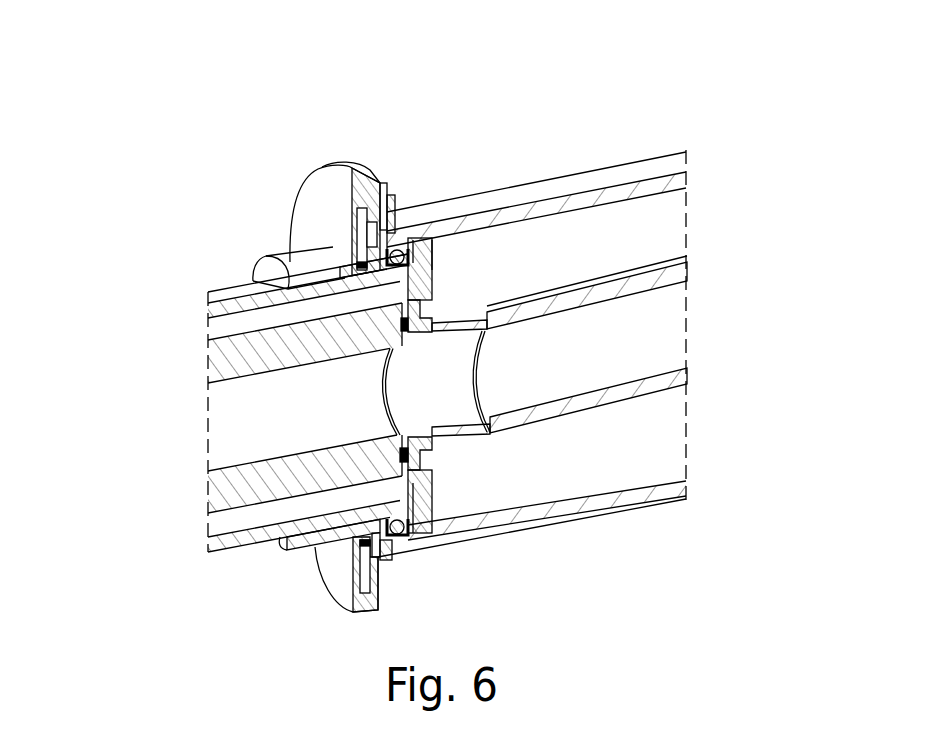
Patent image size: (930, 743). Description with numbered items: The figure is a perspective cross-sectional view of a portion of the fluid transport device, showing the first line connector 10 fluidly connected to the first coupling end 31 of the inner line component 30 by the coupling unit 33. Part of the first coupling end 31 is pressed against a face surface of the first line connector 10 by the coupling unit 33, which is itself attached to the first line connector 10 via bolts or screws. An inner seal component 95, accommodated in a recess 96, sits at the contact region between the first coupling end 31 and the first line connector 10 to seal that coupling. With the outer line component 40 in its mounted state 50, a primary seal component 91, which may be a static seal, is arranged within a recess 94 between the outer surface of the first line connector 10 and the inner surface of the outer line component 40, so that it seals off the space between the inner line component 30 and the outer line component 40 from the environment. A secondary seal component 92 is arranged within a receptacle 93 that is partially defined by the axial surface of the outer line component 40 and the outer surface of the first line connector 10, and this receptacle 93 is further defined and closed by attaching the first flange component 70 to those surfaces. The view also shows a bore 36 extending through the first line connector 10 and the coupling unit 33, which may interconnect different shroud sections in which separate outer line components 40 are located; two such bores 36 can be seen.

The first line connector 10 is at (213, 370).
The inner line component 30 is at (549, 387).
The first coupling end 31 is at (466, 438).
The coupling unit 33 is at (420, 507).
The bore 36 is at (222, 335).
The outer line component 40 is at (456, 228).
The mounted state 50 is at (711, 108).
The first flange component 70 is at (293, 191).
The primary seal component 91 is at (397, 250).
The secondary seal component 92 is at (390, 235).
The receptacle 93 is at (360, 267).
The recess 94 is at (430, 253).
The inner seal component 95 is at (397, 465).
The recess 96 is at (397, 453).